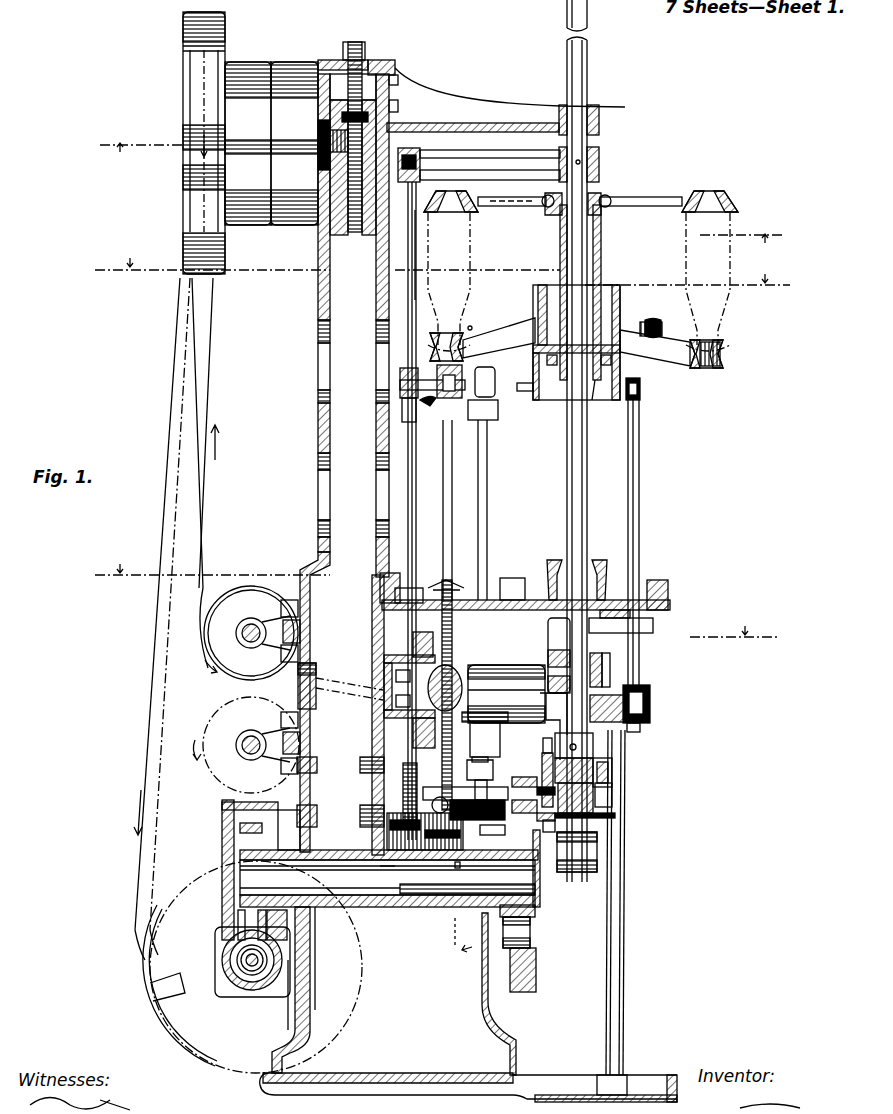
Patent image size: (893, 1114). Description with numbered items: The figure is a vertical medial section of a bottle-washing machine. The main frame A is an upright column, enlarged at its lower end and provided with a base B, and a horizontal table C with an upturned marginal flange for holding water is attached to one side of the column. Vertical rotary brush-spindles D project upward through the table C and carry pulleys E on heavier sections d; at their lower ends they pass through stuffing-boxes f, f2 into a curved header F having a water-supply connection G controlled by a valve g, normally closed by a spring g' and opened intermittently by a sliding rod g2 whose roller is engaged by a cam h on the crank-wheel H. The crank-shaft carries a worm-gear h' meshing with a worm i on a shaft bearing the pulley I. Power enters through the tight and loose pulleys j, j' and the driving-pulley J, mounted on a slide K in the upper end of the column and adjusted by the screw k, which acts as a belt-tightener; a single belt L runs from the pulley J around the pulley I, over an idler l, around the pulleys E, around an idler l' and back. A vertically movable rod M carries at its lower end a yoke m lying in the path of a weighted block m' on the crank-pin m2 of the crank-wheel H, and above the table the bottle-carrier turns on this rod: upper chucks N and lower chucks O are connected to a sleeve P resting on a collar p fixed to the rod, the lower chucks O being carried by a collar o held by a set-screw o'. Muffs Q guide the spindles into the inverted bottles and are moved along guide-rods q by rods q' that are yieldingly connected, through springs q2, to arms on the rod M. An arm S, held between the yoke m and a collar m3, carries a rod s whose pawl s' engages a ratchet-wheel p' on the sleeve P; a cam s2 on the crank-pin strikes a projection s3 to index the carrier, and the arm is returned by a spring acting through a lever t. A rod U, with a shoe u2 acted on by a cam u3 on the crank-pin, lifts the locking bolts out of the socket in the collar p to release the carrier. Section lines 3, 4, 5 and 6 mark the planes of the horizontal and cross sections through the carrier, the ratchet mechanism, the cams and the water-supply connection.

The main frame A is at (339, 457).
The base B is at (553, 1078).
The horizontal table C is at (540, 582).
The vertical rotary brush-spindles D is at (478, 488).
The pulleys E is at (464, 690).
The curved horizontal pipe or header F is at (533, 787).
The water-supply connection G is at (405, 785).
The crank-wheel H is at (540, 960).
The pulley I is at (185, 1043).
The driving-pulley J is at (184, 190).
The vertically-movable slide K is at (366, 236).
The single belt L is at (207, 543).
The vertically-movable rod M is at (565, 505).
The upper chucks or holders N is at (470, 212).
The lower chucks or holders O is at (455, 340).
The sleeve P is at (604, 268).
The guiding sleeves or muffs Q is at (441, 415).
The arm S is at (650, 712).
The vertical rod U is at (551, 635).
The spindle sections d is at (450, 578).
The stuffing-boxes f is at (493, 770).
The block f2 is at (500, 728).
The valve g is at (390, 868).
The spring g' is at (392, 877).
The sliding rod g2 is at (462, 866).
The cam h is at (512, 940).
The worm-gear h' is at (253, 936).
The worm i is at (258, 985).
The tight pulley j is at (248, 143).
The loose pulley j' is at (294, 143).
The screw k is at (365, 78).
The idler l is at (246, 745).
The idler l' is at (252, 633).
The grooved cross-head or yoke m is at (602, 758).
The weighted block m' is at (577, 860).
The crank-pin m2 is at (612, 806).
The collar m3 is at (610, 672).
The collar o is at (497, 322).
The set-screw o' is at (662, 318).
The collar p is at (600, 404).
The ratchet-wheel p' is at (521, 386).
The guide-rods q is at (399, 511).
The vertical rods q' is at (430, 255).
The springs q2 is at (410, 160).
The vertical rod s is at (647, 545).
The pawl s' is at (651, 389).
The cam s2 is at (612, 785).
The projection s3 is at (612, 762).
The lever t is at (655, 628).
The shoe u2 is at (549, 832).
The cam u3 is at (543, 752).
The section line 3 3 is at (441, 191).
The section line 4 4 is at (441, 277).
The section line 5 5 is at (434, 606).
The section line 6 6 is at (461, 861).